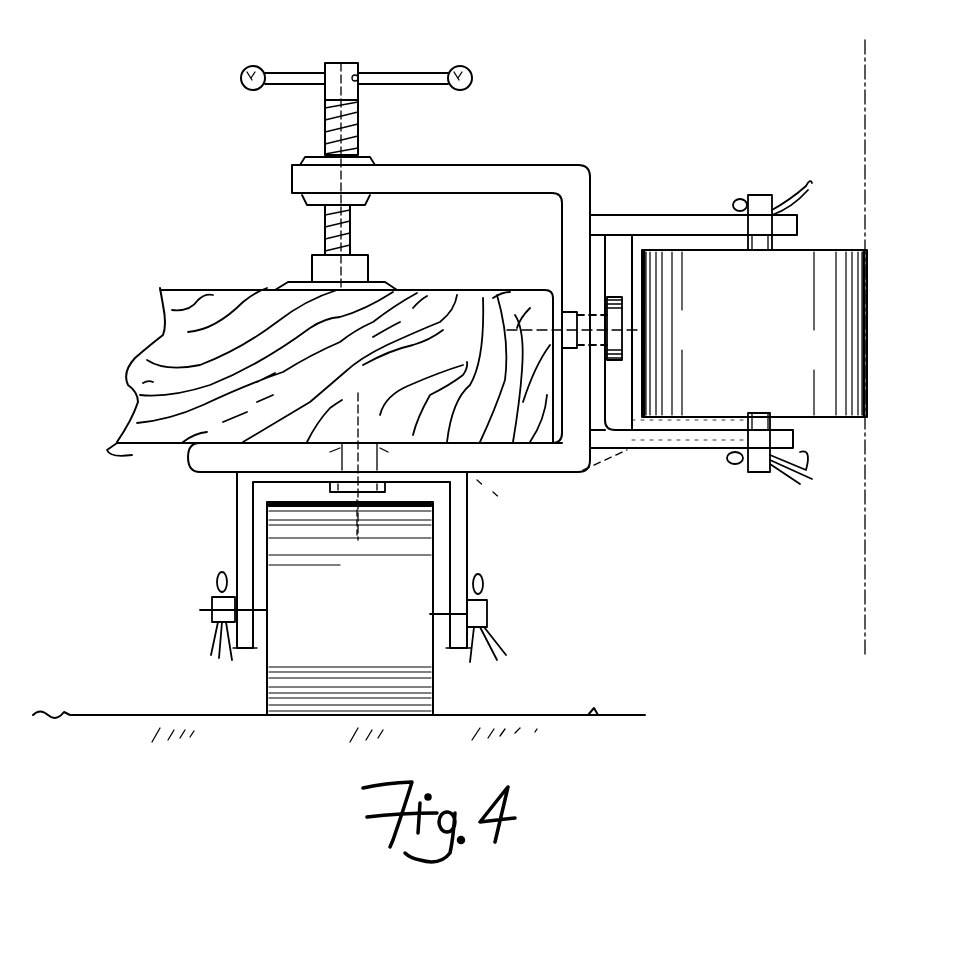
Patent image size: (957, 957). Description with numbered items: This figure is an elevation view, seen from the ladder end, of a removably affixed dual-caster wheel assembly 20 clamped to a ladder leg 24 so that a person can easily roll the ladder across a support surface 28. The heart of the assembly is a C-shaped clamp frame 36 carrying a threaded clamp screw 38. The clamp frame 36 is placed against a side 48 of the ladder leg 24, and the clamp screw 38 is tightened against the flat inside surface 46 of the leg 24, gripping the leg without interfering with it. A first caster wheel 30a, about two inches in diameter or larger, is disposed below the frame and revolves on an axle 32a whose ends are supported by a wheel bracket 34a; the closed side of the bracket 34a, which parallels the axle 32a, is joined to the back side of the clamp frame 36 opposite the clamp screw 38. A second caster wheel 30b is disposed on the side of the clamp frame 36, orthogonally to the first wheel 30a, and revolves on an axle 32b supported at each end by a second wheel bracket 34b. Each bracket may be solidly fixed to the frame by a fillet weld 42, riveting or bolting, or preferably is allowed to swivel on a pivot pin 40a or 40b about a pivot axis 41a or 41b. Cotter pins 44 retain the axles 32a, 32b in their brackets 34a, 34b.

The dual-caster wheel assembly 20 is at (682, 18).
The first ladder leg 24 is at (158, 308).
The support surface 28 is at (557, 717).
The first caster wheel 30a is at (266, 680).
The second caster wheel 30b is at (822, 250).
The first axle 32a is at (205, 610).
The second axle 32b is at (770, 470).
The first wheel bracket 34a is at (470, 530).
The second wheel bracket 34b is at (660, 215).
The clamp frame 36 is at (552, 165).
The clamp screw 38 is at (360, 128).
The first pivot pin 40a is at (330, 487).
The second pivot pin 40b is at (613, 362).
The first pivot axis 41a is at (357, 532).
The second pivot axis 41b is at (537, 327).
The fillet weld attachment 42 is at (220, 478).
The cotter pin 44 is at (215, 579).
The inside surface of ladder leg 46 is at (220, 288).
The side of ladder leg 48 is at (128, 455).